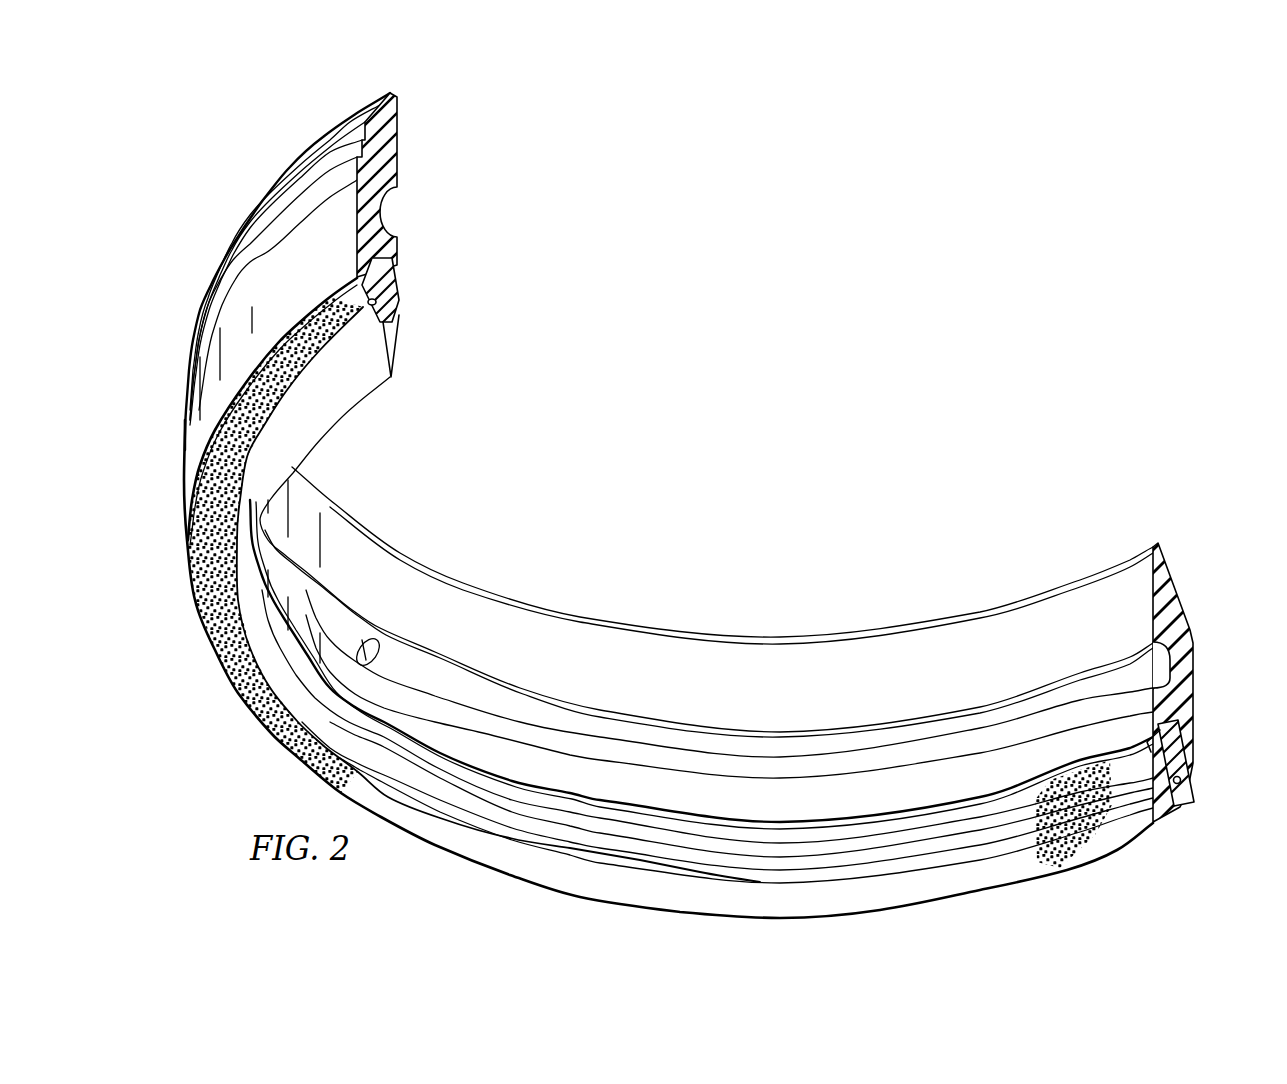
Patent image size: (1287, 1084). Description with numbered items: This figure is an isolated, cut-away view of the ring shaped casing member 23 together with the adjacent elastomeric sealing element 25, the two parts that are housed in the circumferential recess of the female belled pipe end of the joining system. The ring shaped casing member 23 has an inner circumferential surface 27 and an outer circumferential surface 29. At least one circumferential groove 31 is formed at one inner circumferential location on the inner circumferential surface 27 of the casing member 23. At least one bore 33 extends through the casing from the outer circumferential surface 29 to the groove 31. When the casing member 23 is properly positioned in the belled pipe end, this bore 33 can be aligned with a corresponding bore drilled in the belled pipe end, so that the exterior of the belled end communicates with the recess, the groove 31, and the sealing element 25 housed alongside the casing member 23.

The ring shaped casing member 23 is at (721, 474).
The sealing element 25 is at (1183, 809).
The inner circumferential surface 27 is at (1123, 590).
The outer circumferential surface 29 is at (1195, 677).
The circumferential groove 31 is at (384, 213).
The bore 33 is at (385, 659).